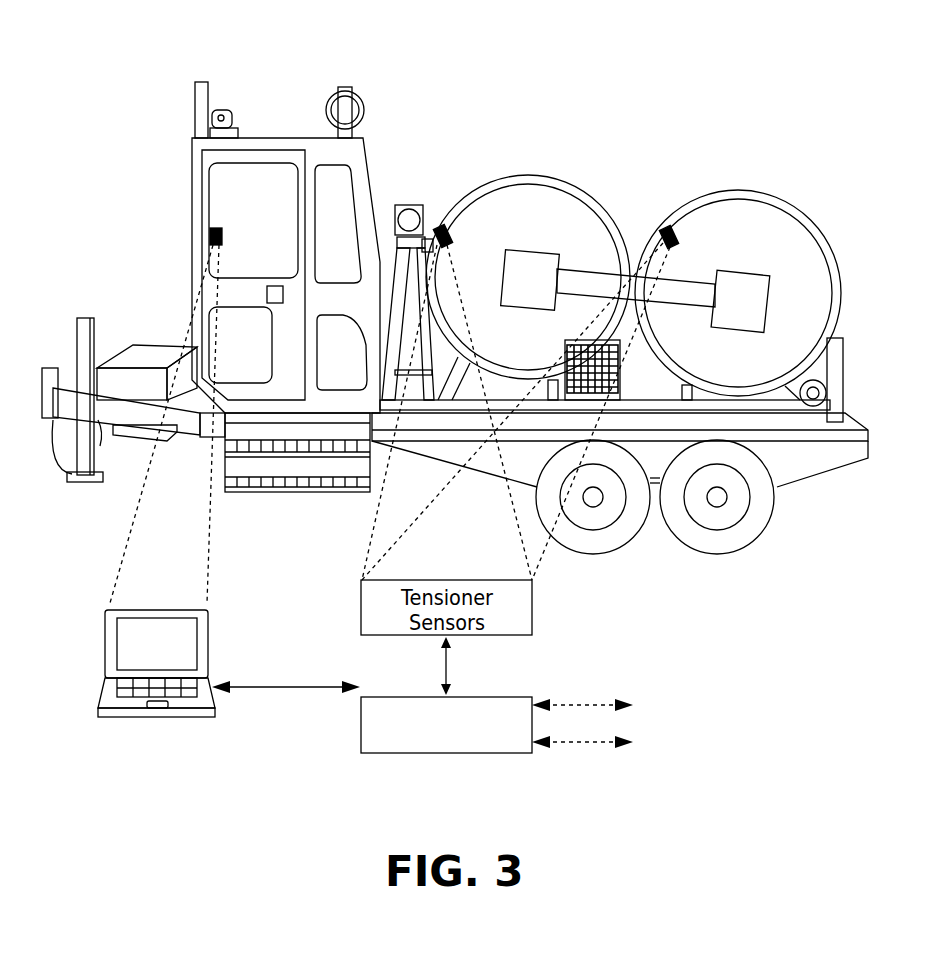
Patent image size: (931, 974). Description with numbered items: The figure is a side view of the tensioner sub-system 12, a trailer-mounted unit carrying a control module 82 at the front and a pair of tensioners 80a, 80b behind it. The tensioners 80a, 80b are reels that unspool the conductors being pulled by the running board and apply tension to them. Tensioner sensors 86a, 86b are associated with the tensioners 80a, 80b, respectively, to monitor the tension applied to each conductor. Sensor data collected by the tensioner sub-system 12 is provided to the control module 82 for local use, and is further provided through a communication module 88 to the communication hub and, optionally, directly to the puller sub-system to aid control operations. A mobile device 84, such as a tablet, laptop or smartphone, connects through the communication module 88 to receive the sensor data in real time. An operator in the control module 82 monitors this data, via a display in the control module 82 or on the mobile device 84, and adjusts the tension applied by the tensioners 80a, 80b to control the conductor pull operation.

The tensioner sub-system 12 is at (86, 122).
The control module 82 is at (263, 124).
The tensioner 80a is at (602, 186).
The tensioner 80b is at (803, 188).
The tensioner sensor 86a is at (441, 226).
The tensioner sensor 86b is at (668, 226).
The mobile device 84 is at (210, 650).
The communication module 88 is at (470, 697).